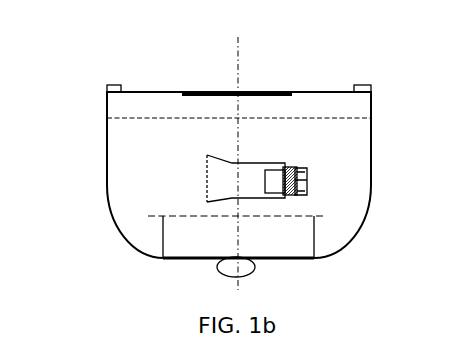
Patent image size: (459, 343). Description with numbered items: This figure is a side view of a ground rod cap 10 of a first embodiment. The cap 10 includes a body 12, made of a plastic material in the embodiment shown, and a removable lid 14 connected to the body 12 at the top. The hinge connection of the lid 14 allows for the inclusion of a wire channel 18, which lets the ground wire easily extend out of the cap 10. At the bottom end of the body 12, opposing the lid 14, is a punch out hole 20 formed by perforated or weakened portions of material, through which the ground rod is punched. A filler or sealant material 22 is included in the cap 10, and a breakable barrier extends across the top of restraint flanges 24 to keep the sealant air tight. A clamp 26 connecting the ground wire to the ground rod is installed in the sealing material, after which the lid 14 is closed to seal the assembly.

The ground rod cap 10 is at (80, 62).
The body 12 is at (344, 229).
The removable lid 14 is at (153, 90).
The wire channel 18 is at (366, 87).
The punch out hole 20 is at (252, 266).
The filler or sealant material 22 is at (138, 122).
The restraint flanges 24 is at (160, 237).
The clamp 26 is at (205, 183).